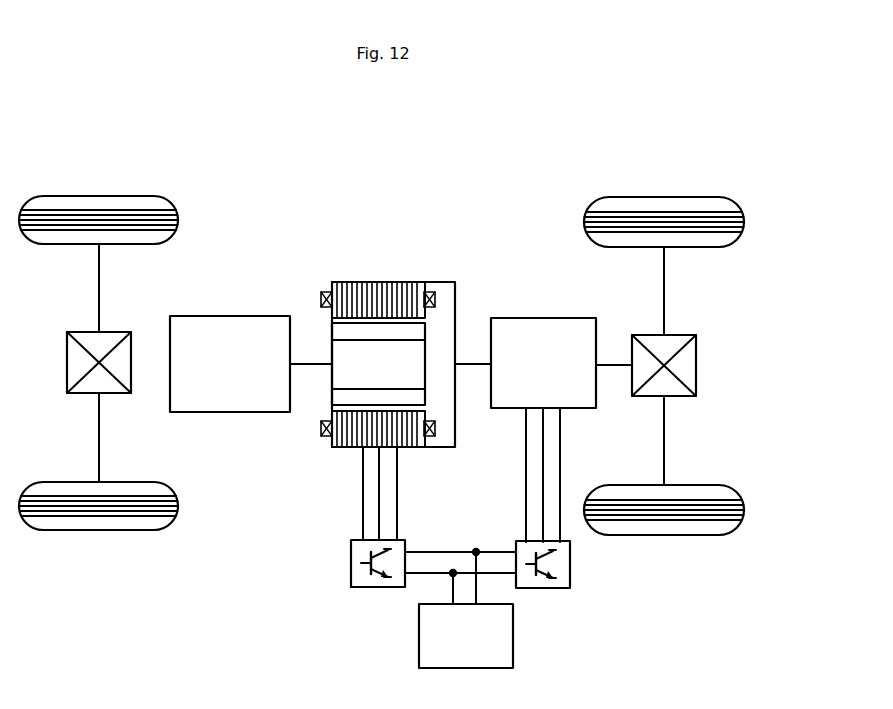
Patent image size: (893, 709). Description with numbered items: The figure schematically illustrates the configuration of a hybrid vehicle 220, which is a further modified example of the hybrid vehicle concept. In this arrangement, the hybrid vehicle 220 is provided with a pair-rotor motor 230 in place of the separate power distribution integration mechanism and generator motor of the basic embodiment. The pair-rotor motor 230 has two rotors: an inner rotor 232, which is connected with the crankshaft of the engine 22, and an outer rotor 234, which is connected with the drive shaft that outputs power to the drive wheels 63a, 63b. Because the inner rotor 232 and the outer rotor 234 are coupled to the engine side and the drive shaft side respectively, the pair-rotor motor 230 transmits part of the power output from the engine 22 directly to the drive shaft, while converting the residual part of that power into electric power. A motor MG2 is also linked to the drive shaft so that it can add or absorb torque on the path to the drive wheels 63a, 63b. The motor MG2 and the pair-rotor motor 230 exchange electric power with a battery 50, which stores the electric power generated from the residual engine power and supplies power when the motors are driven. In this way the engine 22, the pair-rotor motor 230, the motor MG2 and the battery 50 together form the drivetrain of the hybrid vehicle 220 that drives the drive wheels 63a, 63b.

The hybrid vehicle 220 is at (454, 151).
The engine 22 is at (228, 413).
The pair-rotor motor 230 is at (375, 307).
The inner rotor 232 is at (332, 348).
The outer rotor 234 is at (380, 282).
The motor MG2 is at (545, 318).
The drive wheel 63a is at (664, 197).
The drive wheel 63b is at (665, 534).
The battery 50 is at (513, 632).